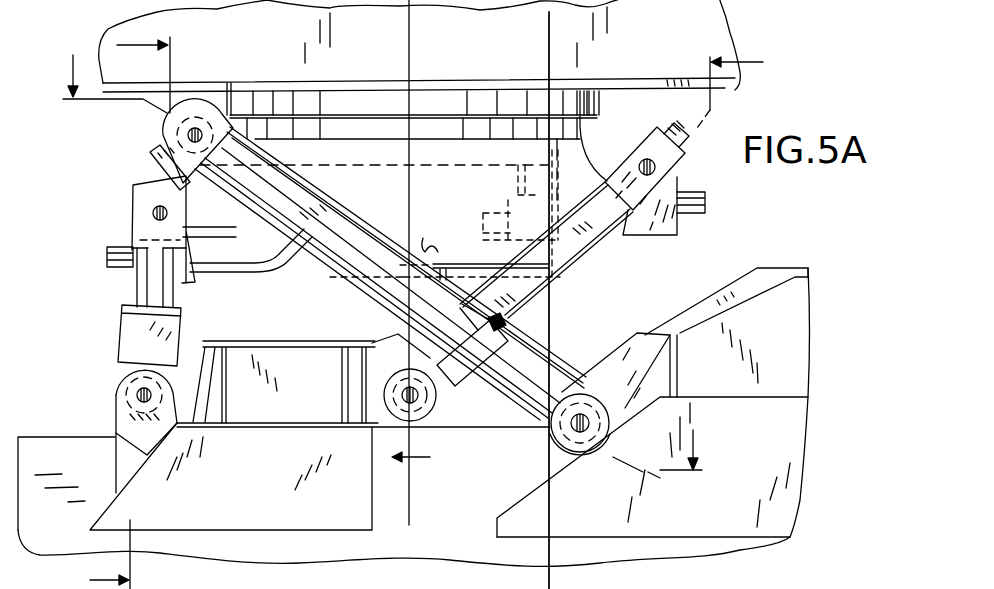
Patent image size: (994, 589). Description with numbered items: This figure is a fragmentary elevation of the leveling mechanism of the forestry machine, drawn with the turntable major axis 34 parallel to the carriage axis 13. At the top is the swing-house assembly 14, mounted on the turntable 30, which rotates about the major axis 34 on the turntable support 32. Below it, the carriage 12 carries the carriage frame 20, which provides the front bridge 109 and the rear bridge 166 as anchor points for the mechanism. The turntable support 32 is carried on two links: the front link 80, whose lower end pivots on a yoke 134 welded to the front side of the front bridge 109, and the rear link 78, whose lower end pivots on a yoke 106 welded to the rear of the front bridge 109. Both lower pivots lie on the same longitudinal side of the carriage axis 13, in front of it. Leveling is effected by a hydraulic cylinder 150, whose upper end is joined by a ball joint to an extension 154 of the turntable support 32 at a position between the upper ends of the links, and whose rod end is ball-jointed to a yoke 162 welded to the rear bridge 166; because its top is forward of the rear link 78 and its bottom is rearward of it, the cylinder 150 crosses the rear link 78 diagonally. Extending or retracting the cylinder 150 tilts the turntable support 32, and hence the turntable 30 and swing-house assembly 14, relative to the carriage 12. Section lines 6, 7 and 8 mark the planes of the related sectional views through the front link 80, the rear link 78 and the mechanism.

The section line 6- 6 is at (139, 311).
The section line 7- 7 is at (588, 262).
The section line 8- 8 is at (382, 281).
The carriage 12 is at (808, 481).
The carriage axis 13 is at (549, 53).
The swing-house assembly 14 is at (731, 43).
The carriage frame 20 is at (61, 434).
The turntable 30 is at (725, 89).
The turntable support 32 is at (590, 159).
The turntable major axis 34 is at (409, 68).
The rear link 78 is at (560, 281).
The front link 80 is at (133, 292).
The yoke 106 is at (432, 417).
The front bridge 109 is at (283, 341).
The yoke 134 is at (113, 392).
The cylinder 150 is at (364, 302).
The extension 154 is at (165, 133).
The yoke 162 is at (597, 363).
The rear bridge 166 is at (804, 268).